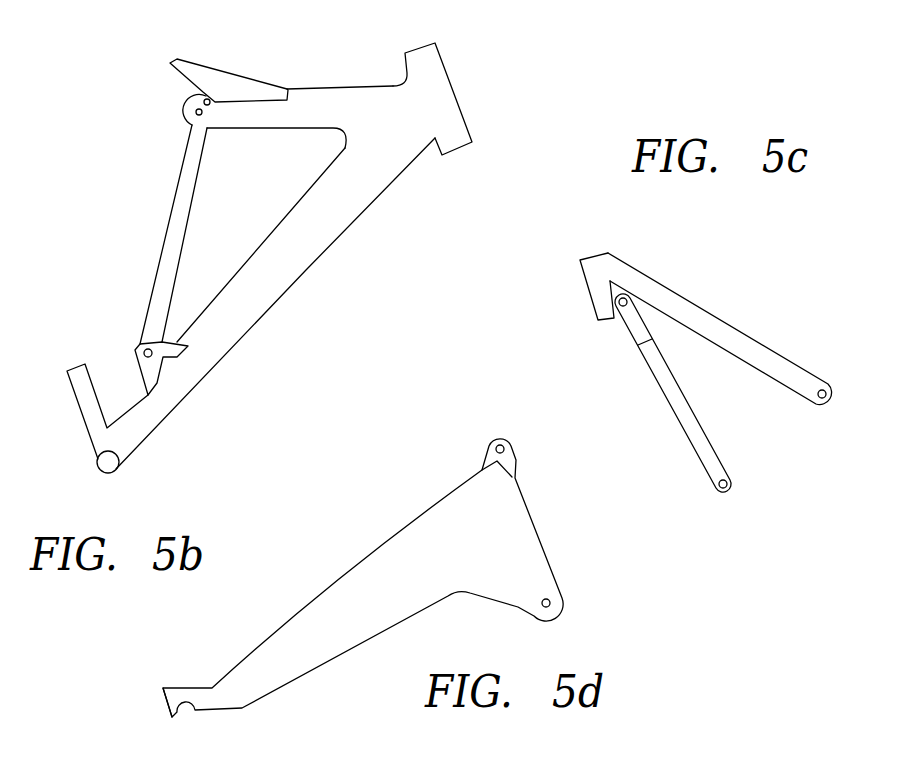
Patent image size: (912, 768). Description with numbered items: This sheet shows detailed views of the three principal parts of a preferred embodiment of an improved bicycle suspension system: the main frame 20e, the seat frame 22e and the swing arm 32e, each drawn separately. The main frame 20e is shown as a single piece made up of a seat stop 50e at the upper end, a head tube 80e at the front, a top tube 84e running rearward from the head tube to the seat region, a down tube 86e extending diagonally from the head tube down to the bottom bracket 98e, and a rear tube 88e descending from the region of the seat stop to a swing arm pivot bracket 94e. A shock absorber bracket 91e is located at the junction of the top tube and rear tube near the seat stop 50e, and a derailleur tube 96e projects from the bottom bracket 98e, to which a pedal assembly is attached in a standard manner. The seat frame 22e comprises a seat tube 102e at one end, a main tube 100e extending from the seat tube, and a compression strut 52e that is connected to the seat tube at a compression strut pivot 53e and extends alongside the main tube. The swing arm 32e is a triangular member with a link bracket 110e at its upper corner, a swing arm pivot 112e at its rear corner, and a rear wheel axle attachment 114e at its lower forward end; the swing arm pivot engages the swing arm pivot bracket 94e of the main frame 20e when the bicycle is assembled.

In FIG. 5b, the main frame 20e is at (272, 259).
In FIG. 5b, the seat stop 50e is at (233, 72).
In FIG. 5b, the head tube 80e is at (448, 75).
In FIG. 5b, the top tube 84e is at (322, 83).
In FIG. 5b, the down tube 86e is at (387, 188).
In FIG. 5b, the rear tube 88e is at (168, 230).
In FIG. 5b, the shock absorber bracket 91e is at (180, 108).
In FIG. 5b, the swing arm pivot bracket 94e is at (137, 346).
In FIG. 5b, the derailleur tube 96e is at (82, 418).
In FIG. 5b, the bottom bracket 98e is at (117, 471).
In FIG. 5c, the seat frame 22e is at (673, 345).
In FIG. 5c, the main tube 100e is at (755, 340).
In FIG. 5c, the seat tube 102e is at (589, 291).
In FIG. 5c, the compression strut 52e is at (688, 438).
In FIG. 5c, the compression strut pivot 53e is at (616, 328).
In FIG. 5d, the swing arm 32e is at (314, 557).
In FIG. 5d, the link bracket 110e is at (488, 441).
In FIG. 5d, the swing arm pivot 112e is at (531, 621).
In FIG. 5d, the rear wheel axle attachment 114e is at (172, 717).